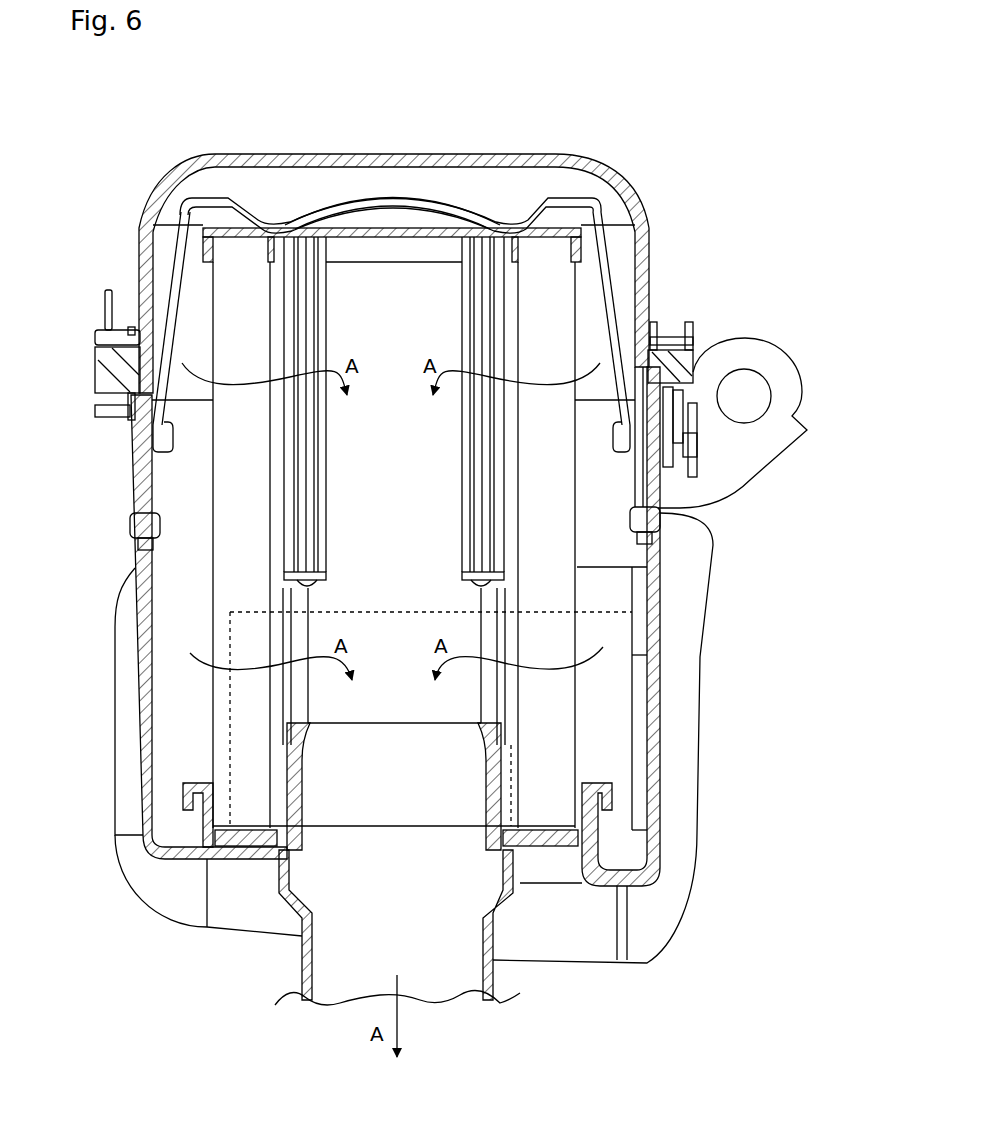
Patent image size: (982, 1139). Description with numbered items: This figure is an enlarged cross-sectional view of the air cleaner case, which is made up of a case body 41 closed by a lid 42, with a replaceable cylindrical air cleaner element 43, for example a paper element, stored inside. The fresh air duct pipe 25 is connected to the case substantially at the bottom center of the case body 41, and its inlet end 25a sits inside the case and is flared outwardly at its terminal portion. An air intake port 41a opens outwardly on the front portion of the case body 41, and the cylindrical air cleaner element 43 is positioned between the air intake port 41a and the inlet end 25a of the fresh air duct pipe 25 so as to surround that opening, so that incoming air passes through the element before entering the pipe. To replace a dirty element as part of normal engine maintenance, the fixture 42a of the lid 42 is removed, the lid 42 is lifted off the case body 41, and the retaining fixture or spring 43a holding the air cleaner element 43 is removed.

The lid 42 is at (622, 183).
The fixture of the lid 42a is at (103, 291).
The air cleaner element 43 is at (548, 316).
The retaining fixture (spring) 43a is at (450, 212).
The case body 41 is at (653, 770).
The air intake port 41a is at (612, 700).
The fresh air duct pipe 25 is at (497, 978).
The inlet end of the fresh air duct pipe 25a is at (388, 760).